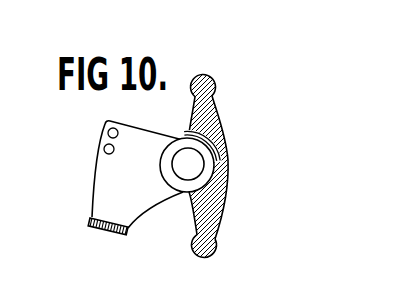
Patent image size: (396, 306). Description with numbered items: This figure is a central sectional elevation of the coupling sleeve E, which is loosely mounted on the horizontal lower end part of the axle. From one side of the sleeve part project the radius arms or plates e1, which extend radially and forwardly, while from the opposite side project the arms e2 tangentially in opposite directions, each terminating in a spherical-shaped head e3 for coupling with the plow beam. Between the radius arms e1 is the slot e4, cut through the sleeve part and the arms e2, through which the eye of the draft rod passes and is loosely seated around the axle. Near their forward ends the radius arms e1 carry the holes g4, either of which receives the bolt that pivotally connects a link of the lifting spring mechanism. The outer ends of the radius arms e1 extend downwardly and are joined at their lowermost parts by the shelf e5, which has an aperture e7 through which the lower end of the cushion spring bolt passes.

The holes g4 is at (108, 133).
The radius arms or plates e1 is at (107, 175).
The arms e2 is at (216, 110).
The spherical-shaped head e3 is at (215, 84).
The slot e4 is at (191, 188).
The shelf e5 is at (91, 220).
The aperture e7 is at (105, 233).
The coupling sleeve E is at (228, 162).